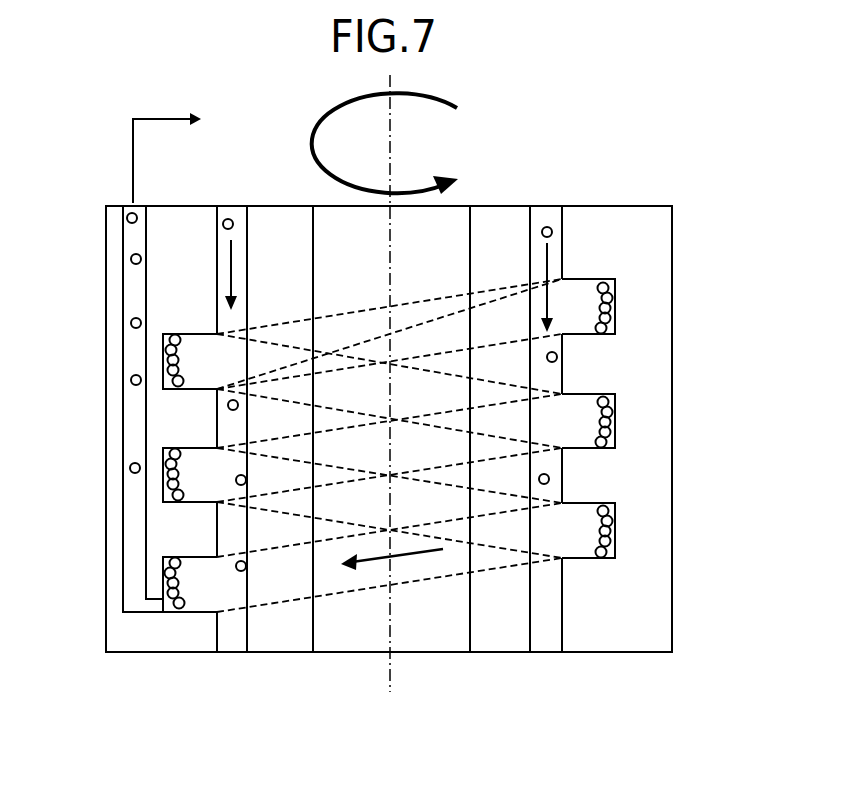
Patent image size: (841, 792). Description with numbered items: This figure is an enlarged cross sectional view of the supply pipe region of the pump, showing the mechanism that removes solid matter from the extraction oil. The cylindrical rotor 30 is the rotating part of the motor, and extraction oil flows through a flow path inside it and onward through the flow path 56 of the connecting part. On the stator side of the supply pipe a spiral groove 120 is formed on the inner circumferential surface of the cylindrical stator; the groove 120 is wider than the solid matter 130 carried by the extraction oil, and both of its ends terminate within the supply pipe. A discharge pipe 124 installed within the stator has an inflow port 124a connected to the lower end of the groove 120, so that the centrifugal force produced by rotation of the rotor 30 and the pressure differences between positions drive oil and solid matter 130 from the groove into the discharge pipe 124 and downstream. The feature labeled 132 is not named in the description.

The rotor 30 is at (503, 223).
The flow path 56 is at (371, 637).
The groove 120 is at (580, 277).
The discharge pipe 124 is at (123, 397).
The inflow port 124a is at (163, 612).
The solid matter 130 is at (617, 283).
The movement direction arrow 132 is at (420, 555).